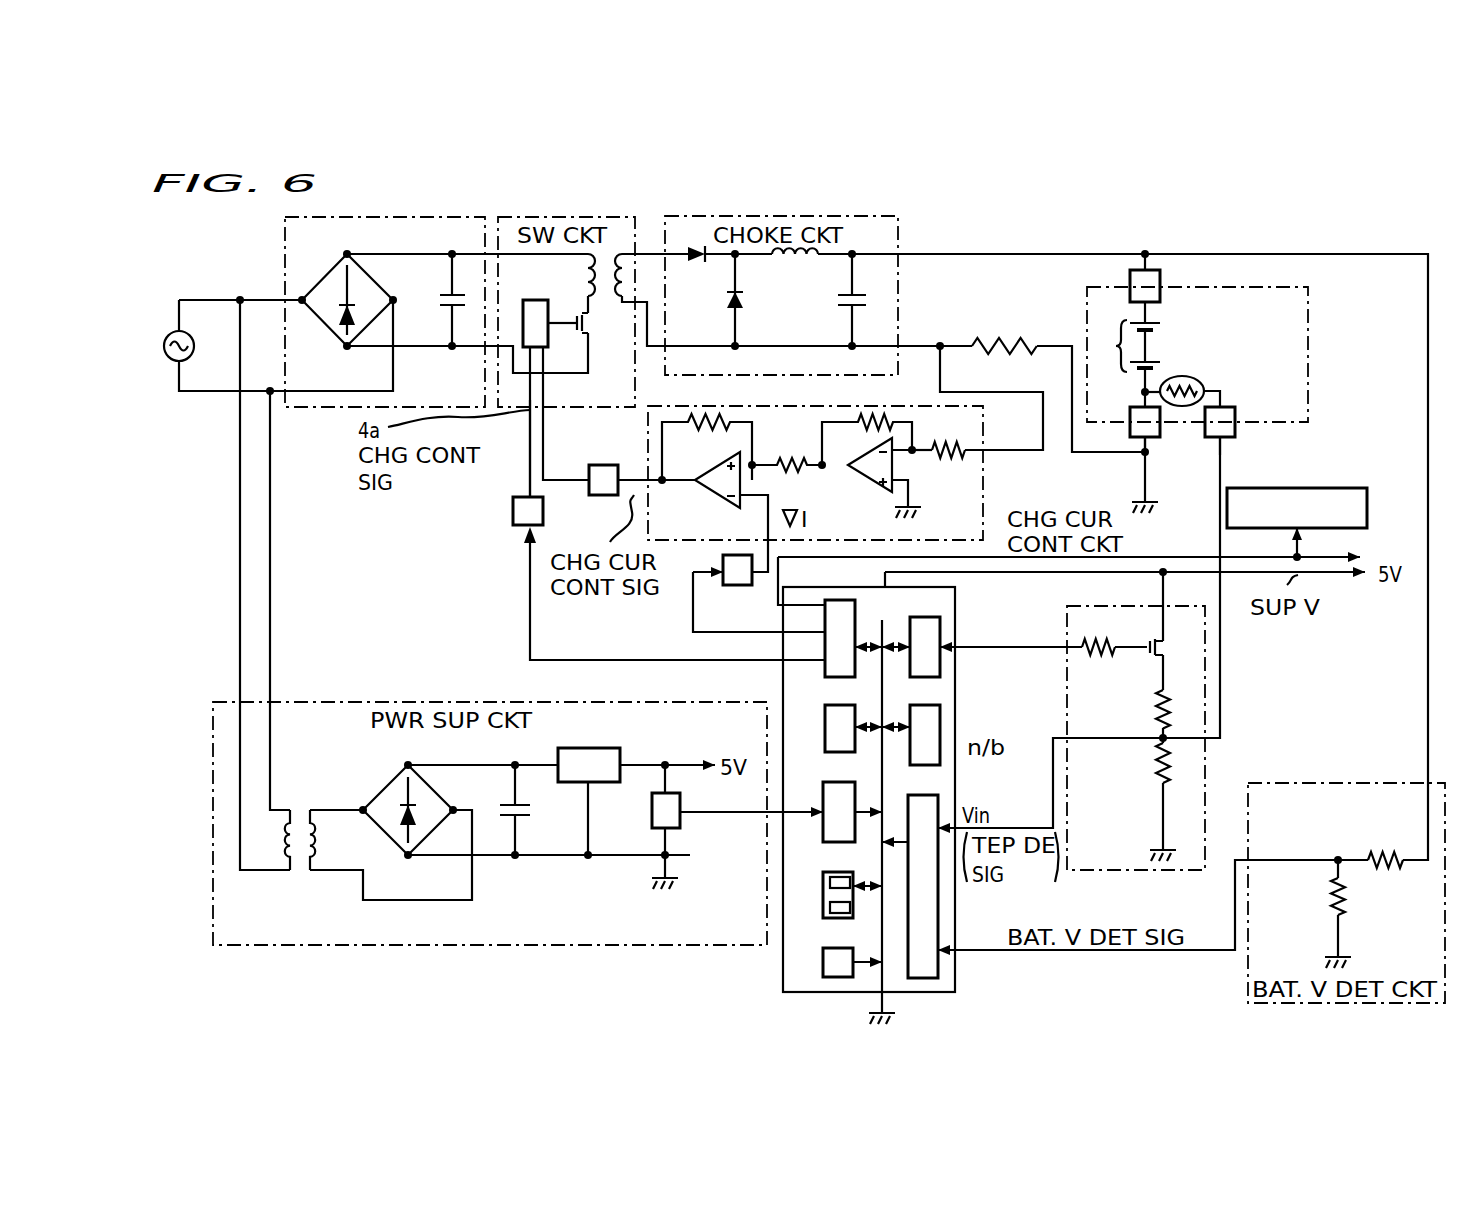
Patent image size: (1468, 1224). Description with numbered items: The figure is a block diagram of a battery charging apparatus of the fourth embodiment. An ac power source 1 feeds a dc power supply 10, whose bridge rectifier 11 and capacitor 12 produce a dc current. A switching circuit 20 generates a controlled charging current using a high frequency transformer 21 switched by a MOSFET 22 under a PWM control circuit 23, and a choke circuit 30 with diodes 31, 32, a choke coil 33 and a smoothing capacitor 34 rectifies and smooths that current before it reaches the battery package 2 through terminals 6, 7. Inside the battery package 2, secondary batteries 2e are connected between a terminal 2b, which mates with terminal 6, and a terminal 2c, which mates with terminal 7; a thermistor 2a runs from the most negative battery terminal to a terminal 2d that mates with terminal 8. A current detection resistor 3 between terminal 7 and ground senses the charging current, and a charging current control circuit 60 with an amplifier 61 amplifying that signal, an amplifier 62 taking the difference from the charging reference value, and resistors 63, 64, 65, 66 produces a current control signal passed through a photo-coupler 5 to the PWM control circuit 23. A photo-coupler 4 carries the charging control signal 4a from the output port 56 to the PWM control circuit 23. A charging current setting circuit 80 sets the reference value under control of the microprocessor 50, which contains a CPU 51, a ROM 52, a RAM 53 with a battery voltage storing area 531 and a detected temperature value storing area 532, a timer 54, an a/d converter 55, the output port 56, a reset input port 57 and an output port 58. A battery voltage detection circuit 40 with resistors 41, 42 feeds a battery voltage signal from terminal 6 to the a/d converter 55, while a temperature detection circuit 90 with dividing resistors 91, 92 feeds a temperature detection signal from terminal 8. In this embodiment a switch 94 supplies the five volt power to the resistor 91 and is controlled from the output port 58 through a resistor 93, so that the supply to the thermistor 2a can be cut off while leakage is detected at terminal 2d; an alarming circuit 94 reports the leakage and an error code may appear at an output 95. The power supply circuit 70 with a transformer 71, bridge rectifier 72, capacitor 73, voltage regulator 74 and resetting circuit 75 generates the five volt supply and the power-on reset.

The ac power source 1 is at (188, 335).
The battery package 2 is at (1308, 287).
The thermistor 2a is at (1190, 376).
The terminal 2b is at (1163, 292).
The terminal 2c is at (1132, 408).
The terminal 2d is at (1234, 407).
The secondary batteries 2e is at (1125, 346).
The current detection resistor 3 is at (1010, 334).
The photo-coupler 4 is at (518, 497).
The charging control signal 4a is at (444, 448).
The photo-coupler 5 is at (598, 495).
The terminal 6 is at (1138, 264).
The terminal 7 is at (1154, 437).
The terminal 8 is at (1226, 438).
The dc power supply 10 is at (397, 217).
The bridge rectifier 11 is at (320, 270).
The capacitor 12 is at (439, 293).
The switching circuit 20 is at (583, 213).
The high frequency transformer 21 is at (607, 297).
The MOSFET 22 is at (590, 331).
The PWM control circuit 23 is at (536, 300).
The choke circuit 30 is at (823, 213).
The diode 31 is at (696, 262).
The diode 32 is at (748, 300).
The choke coil 33 is at (794, 261).
The smoothing capacitor 34 is at (839, 304).
The battery voltage detection circuit 40 is at (1248, 987).
The resistor 41 is at (1381, 850).
The resistor 42 is at (1330, 890).
The microprocessor 50 is at (955, 975).
The CPU 51 is at (940, 717).
The ROM 52 is at (849, 960).
The RAM 53 is at (849, 883).
The battery voltage storing area 531 is at (832, 877).
The detected temperature value storing area 532 is at (832, 914).
The timer 54 is at (851, 720).
The a/d converter 55 is at (939, 795).
The output port 56 is at (855, 628).
The reset input port 57 is at (851, 795).
The output port 58 is at (940, 632).
The charging current control circuit 60 is at (983, 476).
The amplifier 61 is at (866, 480).
The amplifier 62 is at (713, 493).
The resistor 63 is at (941, 448).
The resistor 64 is at (858, 427).
The resistor 65 is at (793, 460).
The resistor 66 is at (709, 429).
The power supply circuit 70 is at (367, 702).
The transformer 71 is at (300, 812).
The bridge rectifier 72 is at (382, 784).
The capacitor 73 is at (500, 808).
The voltage regulator 74 is at (576, 782).
The resetting circuit 75 is at (650, 826).
The charging current setting circuit 80 is at (738, 585).
The battery temperature detection circuit 90 is at (1069, 620).
The dividing resistor 91 is at (1155, 708).
The dividing resistor 92 is at (1154, 776).
The resistor 93 is at (1098, 642).
The switch 94 is at (1161, 644).
The output 95 is at (1333, 553).